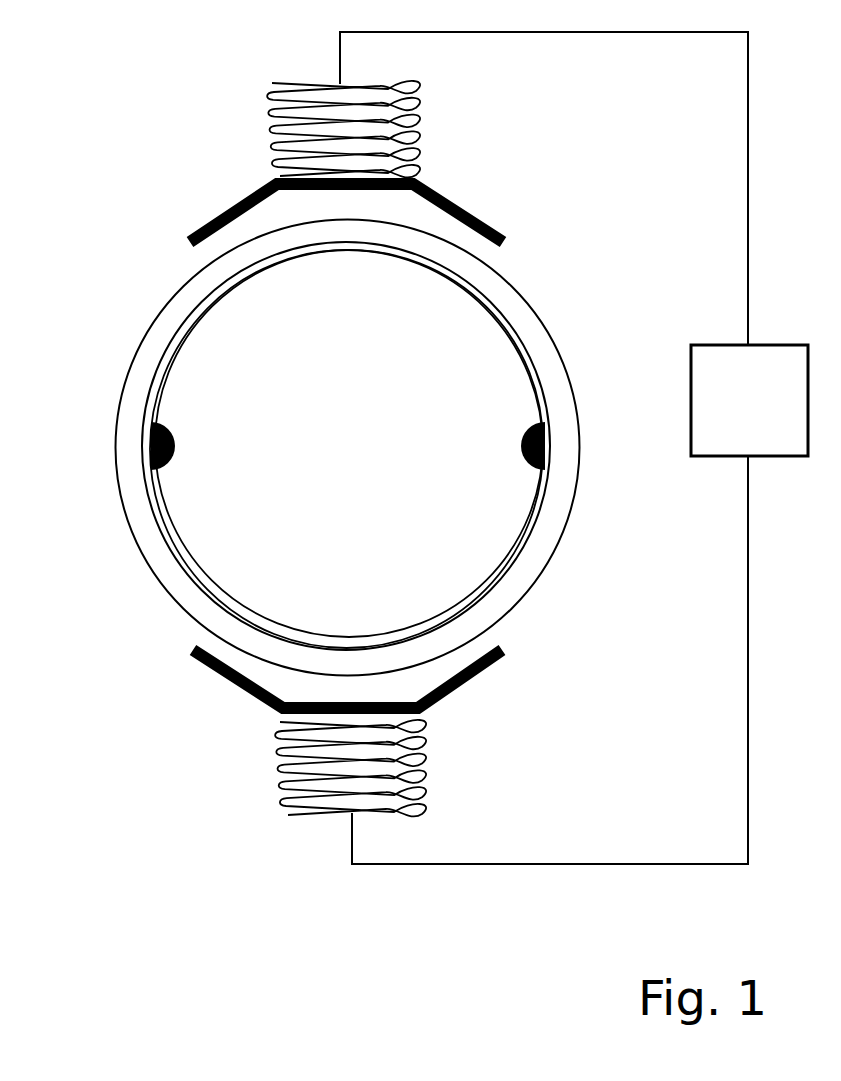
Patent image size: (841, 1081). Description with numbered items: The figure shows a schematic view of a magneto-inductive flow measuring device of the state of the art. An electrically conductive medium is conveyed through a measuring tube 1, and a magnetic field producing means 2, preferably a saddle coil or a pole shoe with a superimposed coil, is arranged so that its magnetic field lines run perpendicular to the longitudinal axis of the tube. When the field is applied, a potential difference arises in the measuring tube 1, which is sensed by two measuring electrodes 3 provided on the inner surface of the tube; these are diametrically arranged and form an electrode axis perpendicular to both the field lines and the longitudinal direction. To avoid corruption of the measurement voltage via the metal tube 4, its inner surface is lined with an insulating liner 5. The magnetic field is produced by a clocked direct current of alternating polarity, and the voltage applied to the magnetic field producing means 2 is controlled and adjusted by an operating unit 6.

The measuring tube 1 is at (103, 150).
The magnetic field producing means 2 is at (470, 142).
The measuring electrodes 3 is at (547, 447).
The metal tube 4 is at (547, 328).
The liner 5 is at (538, 513).
The operating unit 6 is at (749, 400).